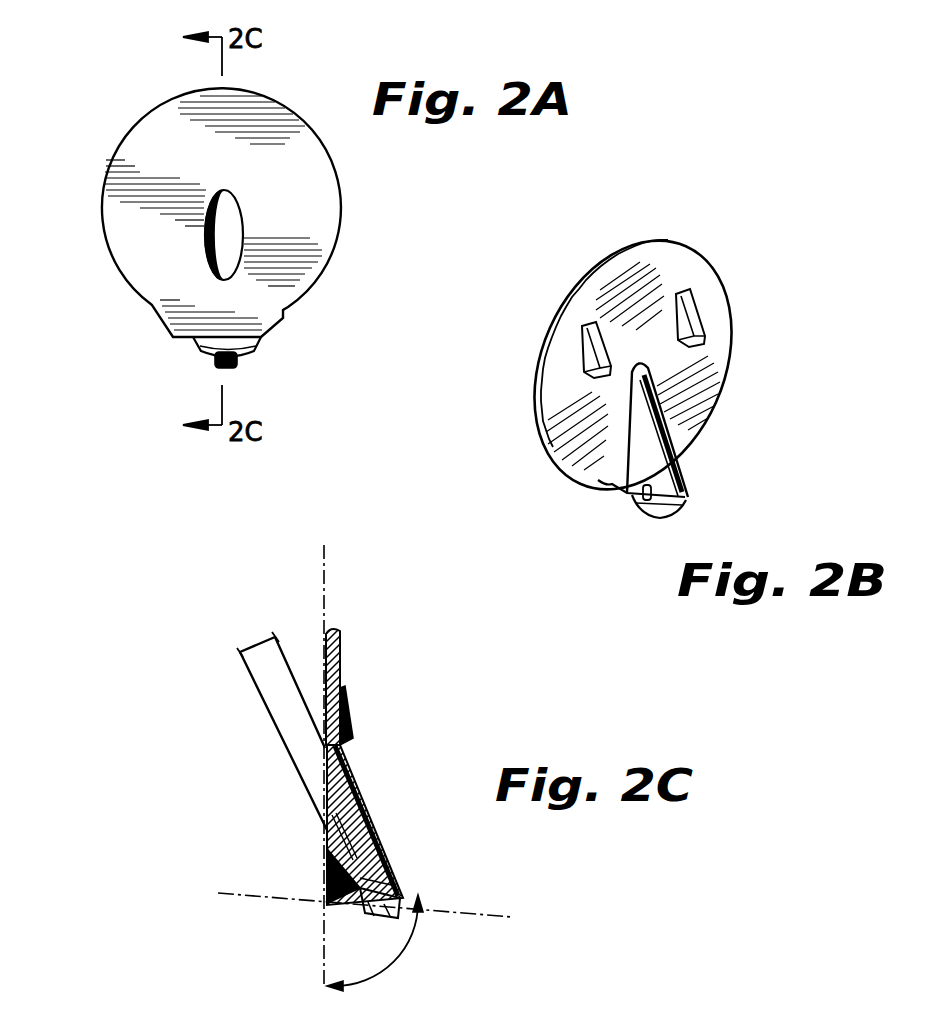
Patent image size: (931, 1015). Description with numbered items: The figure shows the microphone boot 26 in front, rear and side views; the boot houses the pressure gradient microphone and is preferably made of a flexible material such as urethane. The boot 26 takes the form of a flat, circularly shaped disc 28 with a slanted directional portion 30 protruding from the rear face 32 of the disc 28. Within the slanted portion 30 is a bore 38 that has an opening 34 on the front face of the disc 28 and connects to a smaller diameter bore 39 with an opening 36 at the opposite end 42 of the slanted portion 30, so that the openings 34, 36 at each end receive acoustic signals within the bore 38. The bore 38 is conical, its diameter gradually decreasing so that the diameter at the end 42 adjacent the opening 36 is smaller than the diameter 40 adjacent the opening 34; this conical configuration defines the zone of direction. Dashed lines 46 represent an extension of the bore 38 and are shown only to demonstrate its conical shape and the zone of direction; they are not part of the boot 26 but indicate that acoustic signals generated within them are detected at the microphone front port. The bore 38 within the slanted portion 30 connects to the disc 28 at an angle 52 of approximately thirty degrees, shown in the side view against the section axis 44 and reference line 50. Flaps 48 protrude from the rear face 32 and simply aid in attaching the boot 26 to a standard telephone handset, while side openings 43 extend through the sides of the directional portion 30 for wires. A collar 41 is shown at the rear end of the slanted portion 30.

In FIG. 2A, the microphone boot 26 is at (308, 92).
In FIG. 2B, the microphone boot 26 is at (748, 258).
In FIG. 2C, the microphone boot 26 is at (425, 670).
In FIG. 2A, the disc 28 is at (118, 262).
In FIG. 2B, the disc 28 is at (590, 278).
In FIG. 2C, the disc 28 is at (340, 655).
In FIG. 2B, the slanted directional portion 30 is at (624, 441).
In FIG. 2C, the slanted directional portion 30 is at (360, 826).
In FIG. 2B, the rear face 32 is at (705, 420).
In FIG. 2C, the rear face 32 is at (340, 758).
In FIG. 2A, the opening 34 is at (240, 243).
In FIG. 2C, the opening 34 is at (324, 792).
In FIG. 2A, the opening 36 is at (216, 370).
In FIG. 2B, the opening 36 is at (700, 508).
In FIG. 2C, the opening 36 is at (382, 922).
In FIG. 2C, the bore 38 is at (328, 840).
In FIG. 2C, the smaller diameter bore 39 is at (405, 896).
In FIG. 2C, the diameter 40 is at (256, 641).
In FIG. 2A, the collar 41 is at (238, 368).
In FIG. 2C, the collar 41 is at (338, 918).
In FIG. 2C, the opposite end 42 is at (372, 852).
In FIG. 2B, the side openings 43 is at (638, 497).
In FIG. 2C, the central axis 44 is at (330, 578).
In FIG. 2C, the dashed lines 46 is at (280, 640).
In FIG. 2B, the flaps 48 is at (695, 315).
In FIG. 2C, the flaps 48 is at (352, 725).
In FIG. 2C, the reference plane 50 is at (505, 912).
In FIG. 2C, the angle 52 is at (410, 957).